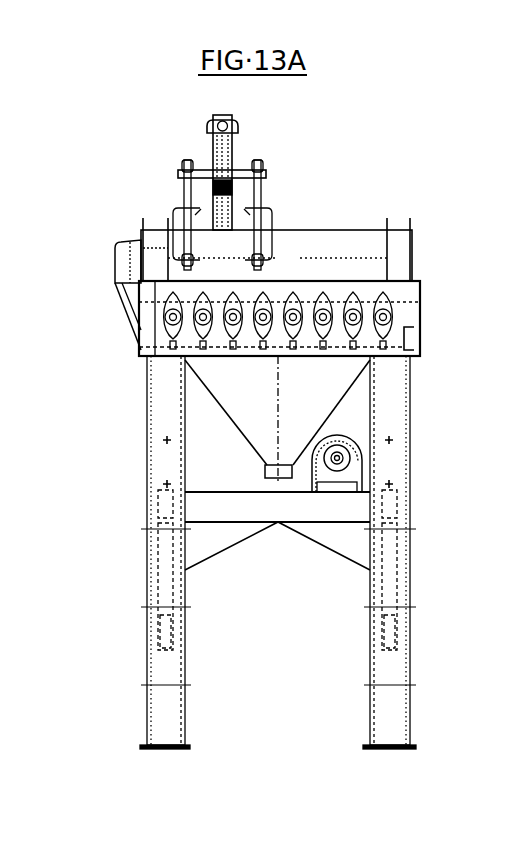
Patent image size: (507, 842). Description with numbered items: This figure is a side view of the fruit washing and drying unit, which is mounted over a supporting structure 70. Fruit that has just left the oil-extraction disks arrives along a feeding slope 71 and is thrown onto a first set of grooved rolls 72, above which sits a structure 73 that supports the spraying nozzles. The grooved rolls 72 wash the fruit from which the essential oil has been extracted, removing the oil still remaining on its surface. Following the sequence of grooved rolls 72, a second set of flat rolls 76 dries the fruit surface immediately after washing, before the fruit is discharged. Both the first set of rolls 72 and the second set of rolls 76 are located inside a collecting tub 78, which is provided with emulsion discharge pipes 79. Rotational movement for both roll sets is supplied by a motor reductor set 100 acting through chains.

The supporting structure 70 is at (157, 667).
The feeding slope 71 is at (122, 261).
The first set of grooved rolls 72 is at (250, 292).
The structure 73 is at (242, 165).
The second set of flat rolls 76 is at (408, 300).
The collecting tub 78 is at (333, 385).
The emulsion discharge pipes 79 is at (262, 468).
The motor reductor set 100 is at (340, 458).